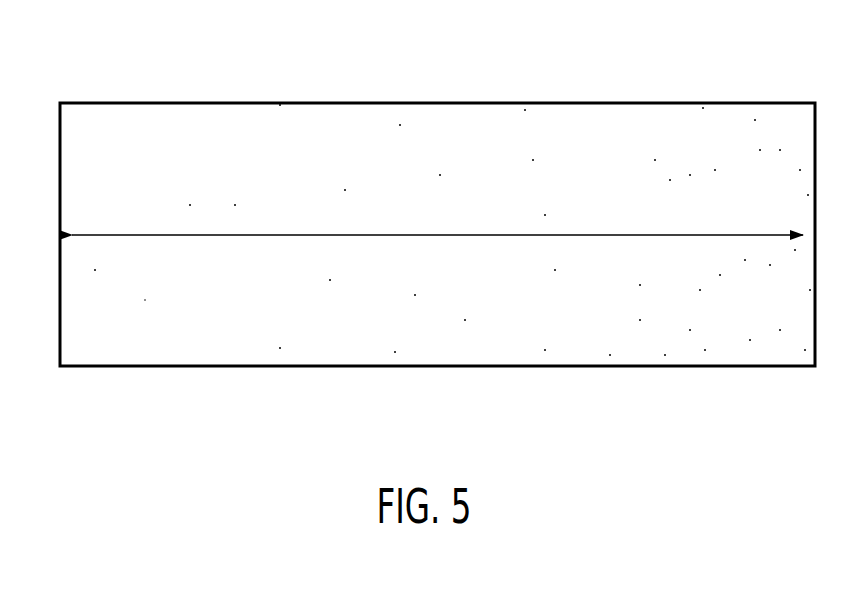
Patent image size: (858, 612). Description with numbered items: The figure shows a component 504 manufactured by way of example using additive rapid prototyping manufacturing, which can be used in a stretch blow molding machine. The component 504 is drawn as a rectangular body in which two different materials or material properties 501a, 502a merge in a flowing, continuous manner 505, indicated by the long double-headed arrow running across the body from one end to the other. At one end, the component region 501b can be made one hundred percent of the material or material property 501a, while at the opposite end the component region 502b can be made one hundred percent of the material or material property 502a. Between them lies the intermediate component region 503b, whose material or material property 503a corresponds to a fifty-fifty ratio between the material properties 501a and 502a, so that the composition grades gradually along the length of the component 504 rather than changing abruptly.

The first material/material property 501a is at (99, 158).
The first component region 501b is at (99, 158).
The second material/material property 502a is at (773, 158).
The second component region 502b is at (773, 158).
The intermediate material/material property 503a is at (438, 158).
The intermediate component region 503b is at (438, 158).
The component 504 is at (552, 380).
The flowing/continuous merging 505 is at (180, 235).